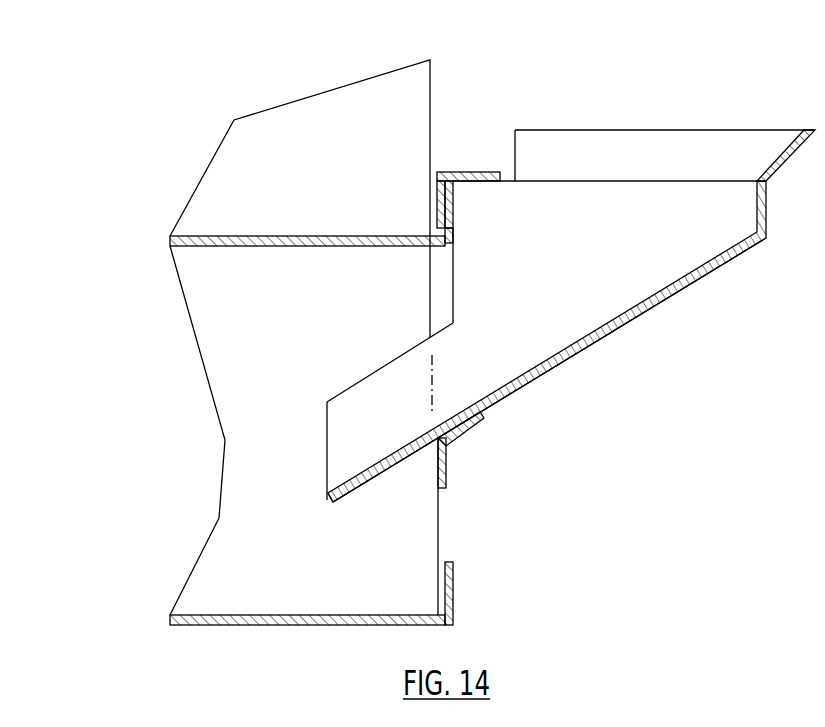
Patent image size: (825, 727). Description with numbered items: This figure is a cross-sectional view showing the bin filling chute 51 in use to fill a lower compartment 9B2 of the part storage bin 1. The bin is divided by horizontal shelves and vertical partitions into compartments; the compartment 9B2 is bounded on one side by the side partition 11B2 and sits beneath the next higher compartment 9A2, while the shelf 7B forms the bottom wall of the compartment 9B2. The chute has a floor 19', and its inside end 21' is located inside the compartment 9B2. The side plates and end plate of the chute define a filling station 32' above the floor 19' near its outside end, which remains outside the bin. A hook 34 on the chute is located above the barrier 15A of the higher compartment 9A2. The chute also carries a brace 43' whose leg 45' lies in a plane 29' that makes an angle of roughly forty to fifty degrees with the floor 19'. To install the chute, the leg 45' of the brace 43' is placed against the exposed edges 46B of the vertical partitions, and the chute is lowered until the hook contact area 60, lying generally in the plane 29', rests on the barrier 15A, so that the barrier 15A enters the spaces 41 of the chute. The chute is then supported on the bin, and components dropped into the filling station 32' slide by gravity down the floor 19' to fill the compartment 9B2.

The compartment 9A2 is at (292, 182).
The side partition 11B2 is at (313, 316).
The compartment 9B2 is at (370, 578).
The shelf 7B is at (350, 630).
The part storage bin 1 is at (474, 600).
The exposed edges of the vertical partitions 46B is at (440, 522).
The brace leg 45' is at (501, 468).
The brace 43' is at (497, 433).
The inside end 21' is at (291, 467).
The plane 29' is at (391, 400).
The floor 19' is at (547, 341).
The bin filling chute 51 is at (646, 331).
The filling station 32' is at (665, 128).
The hook 34 is at (475, 150).
The contact area 60 is at (453, 187).
The spaces 41 is at (455, 202).
The barrier 15A is at (448, 230).